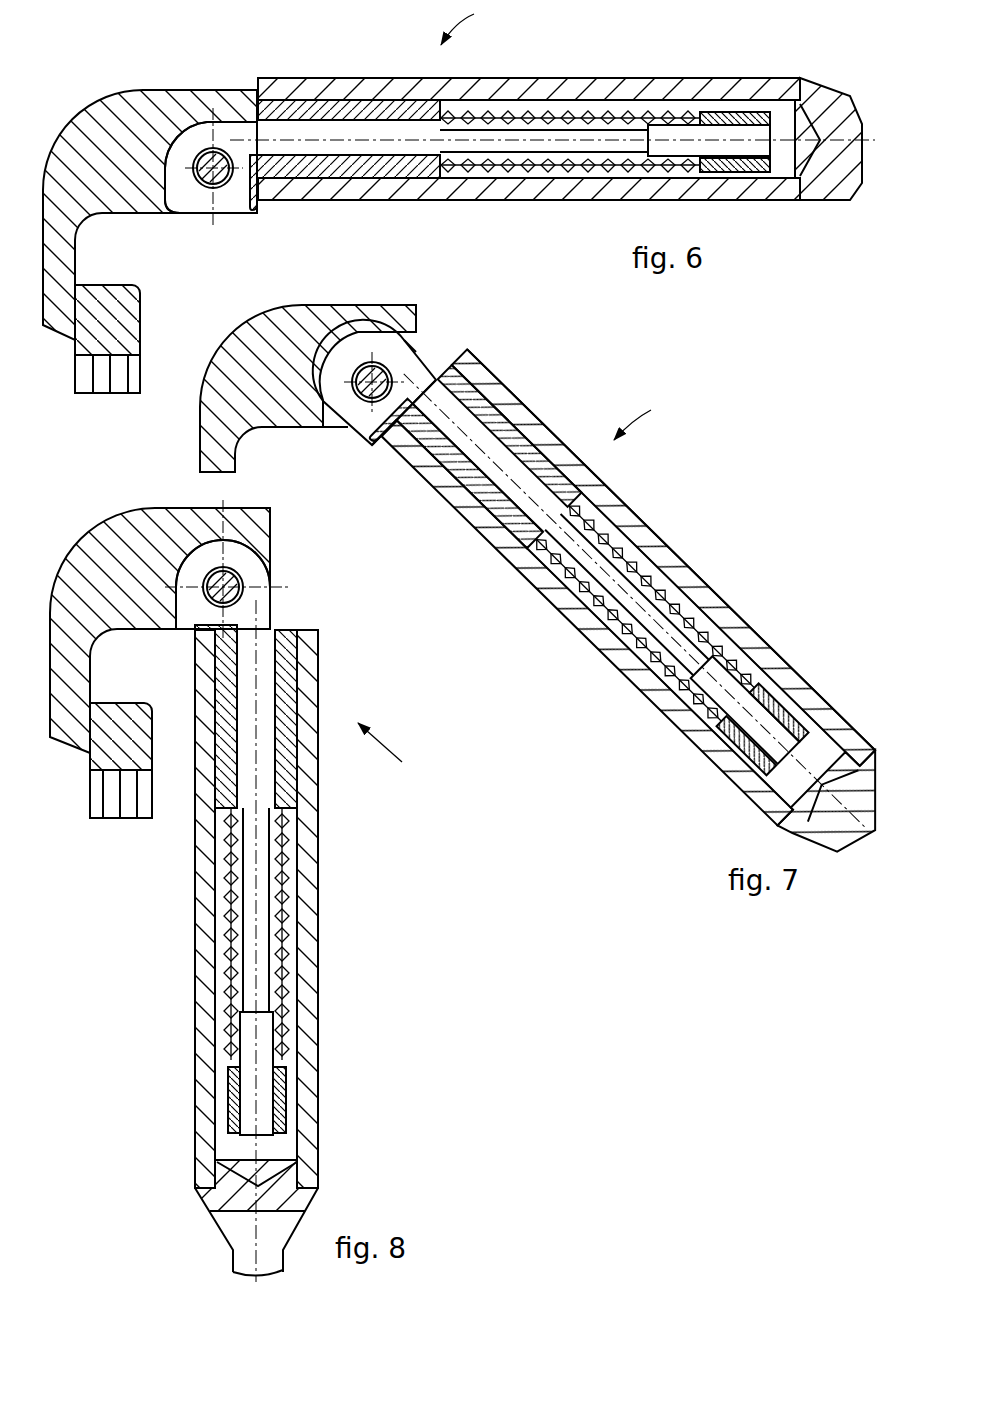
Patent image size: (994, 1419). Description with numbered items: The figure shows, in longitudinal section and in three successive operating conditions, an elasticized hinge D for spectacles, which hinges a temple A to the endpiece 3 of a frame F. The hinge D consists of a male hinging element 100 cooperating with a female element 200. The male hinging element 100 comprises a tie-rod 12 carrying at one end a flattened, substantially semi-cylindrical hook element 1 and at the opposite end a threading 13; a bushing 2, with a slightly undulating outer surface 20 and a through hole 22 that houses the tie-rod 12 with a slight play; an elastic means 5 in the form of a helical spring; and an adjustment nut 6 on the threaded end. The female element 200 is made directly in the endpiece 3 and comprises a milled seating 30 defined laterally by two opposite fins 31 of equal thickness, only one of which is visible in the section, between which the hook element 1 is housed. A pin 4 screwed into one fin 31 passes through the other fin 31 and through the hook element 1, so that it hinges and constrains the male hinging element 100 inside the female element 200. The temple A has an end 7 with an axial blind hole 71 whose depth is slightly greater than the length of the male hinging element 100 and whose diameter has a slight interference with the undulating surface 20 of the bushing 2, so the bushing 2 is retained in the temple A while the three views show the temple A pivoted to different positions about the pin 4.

In FIG. 6, the hook element 1 is at (194, 200).
In FIG. 7, the hook element 1 is at (343, 405).
In FIG. 8, the hook element 1 is at (262, 570).
In FIG. 6, the bushing 2 is at (338, 112).
In FIG. 7, the bushing 2 is at (516, 420).
In FIG. 8, the bushing 2 is at (300, 648).
In FIG. 6, the endpiece 3 is at (80, 143).
In FIG. 7, the endpiece 3 is at (258, 328).
In FIG. 8, the endpiece 3 is at (108, 545).
In FIG. 6, the pin 4 is at (220, 178).
In FIG. 7, the pin 4 is at (370, 366).
In FIG. 8, the pin 4 is at (240, 594).
In FIG. 6, the elastic means 5 is at (556, 116).
In FIG. 7, the elastic means 5 is at (668, 572).
In FIG. 8, the elastic means 5 is at (275, 865).
In FIG. 6, the adjustment nut 6 is at (752, 170).
In FIG. 7, the adjustment nut 6 is at (782, 716).
In FIG. 8, the adjustment nut 6 is at (237, 1097).
In FIG. 6, the end of the temple 7 is at (668, 90).
In FIG. 7, the end of the temple 7 is at (648, 612).
In FIG. 8, the end of the temple 7 is at (312, 784).
In FIG. 6, the tie-rod 12 is at (578, 148).
In FIG. 7, the tie-rod 12 is at (528, 504).
In FIG. 8, the tie-rod 12 is at (254, 904).
In FIG. 6, the threading 13 is at (740, 135).
In FIG. 7, the threading 13 is at (720, 718).
In FIG. 8, the threading 13 is at (265, 1026).
In FIG. 6, the undulating outer surface 20 is at (365, 100).
In FIG. 7, the undulating outer surface 20 is at (535, 444).
In FIG. 8, the undulating outer surface 20 is at (300, 698).
In FIG. 6, the through hole 22 is at (387, 158).
In FIG. 7, the through hole 22 is at (430, 470).
In FIG. 8, the through hole 22 is at (237, 655).
In FIG. 7, the seating 30 is at (450, 343).
In FIG. 6, the fins 31 is at (173, 205).
In FIG. 7, the fins 31 is at (330, 418).
In FIG. 8, the fins 31 is at (268, 550).
In FIG. 6, the axial blind hole 71 is at (606, 100).
In FIG. 7, the axial blind hole 71 is at (616, 525).
In FIG. 8, the axial blind hole 71 is at (289, 914).
In FIG. 6, the male hinging element 100 is at (254, 80).
In FIG. 7, the male hinging element 100 is at (454, 384).
In FIG. 8, the male hinging element 100 is at (280, 628).
In FIG. 6, the female element 200 is at (268, 205).
In FIG. 7, the female element 200 is at (432, 322).
In FIG. 8, the female element 200 is at (312, 540).
In FIG. 6, the temple A is at (844, 104).
In FIG. 7, the temple A is at (850, 838).
In FIG. 8, the temple A is at (237, 1233).
In FIG. 6, the elasticized hinge D is at (470, 22).
In FIG. 7, the elasticized hinge D is at (645, 410).
In FIG. 8, the elasticized hinge D is at (395, 757).
In FIG. 6, the frame F is at (120, 300).
In FIG. 8, the frame F is at (133, 727).